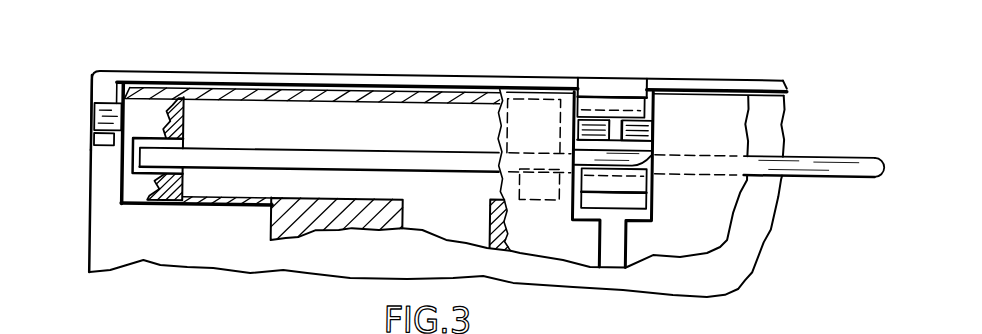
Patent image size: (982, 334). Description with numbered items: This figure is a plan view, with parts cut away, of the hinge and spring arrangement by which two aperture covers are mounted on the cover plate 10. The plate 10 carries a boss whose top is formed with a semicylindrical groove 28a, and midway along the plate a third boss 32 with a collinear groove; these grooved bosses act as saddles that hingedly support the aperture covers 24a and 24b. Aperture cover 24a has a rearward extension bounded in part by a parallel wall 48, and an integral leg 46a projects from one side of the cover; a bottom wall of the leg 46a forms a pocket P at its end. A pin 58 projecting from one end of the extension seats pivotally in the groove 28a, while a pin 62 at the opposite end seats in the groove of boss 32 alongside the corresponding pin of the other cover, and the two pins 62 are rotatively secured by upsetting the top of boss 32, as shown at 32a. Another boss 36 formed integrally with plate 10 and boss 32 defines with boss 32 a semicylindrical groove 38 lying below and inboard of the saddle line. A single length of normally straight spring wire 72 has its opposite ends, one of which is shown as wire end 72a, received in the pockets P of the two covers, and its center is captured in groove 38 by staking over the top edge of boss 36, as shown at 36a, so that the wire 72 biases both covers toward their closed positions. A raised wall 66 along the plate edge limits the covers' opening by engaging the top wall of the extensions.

The cover plate 10 is at (92, 179).
The semicylindrical groove 28a is at (92, 108).
The pin 58 is at (103, 117).
The raised wall 66 is at (198, 78).
The wall 48 is at (275, 88).
The leg 46a is at (187, 196).
The pocket P is at (148, 172).
The rod end 72a is at (174, 157).
The spring wire 72 is at (808, 152).
The aperture cover 24a is at (339, 221).
The aperture cover 24b is at (656, 247).
The boss 36 is at (630, 194).
The staked top edge of boss 36a is at (643, 175).
The semicylindrical groove 38 is at (656, 151).
The pin 62 is at (589, 120).
The boss 32 is at (596, 76).
The upset top of boss 32a is at (626, 94).